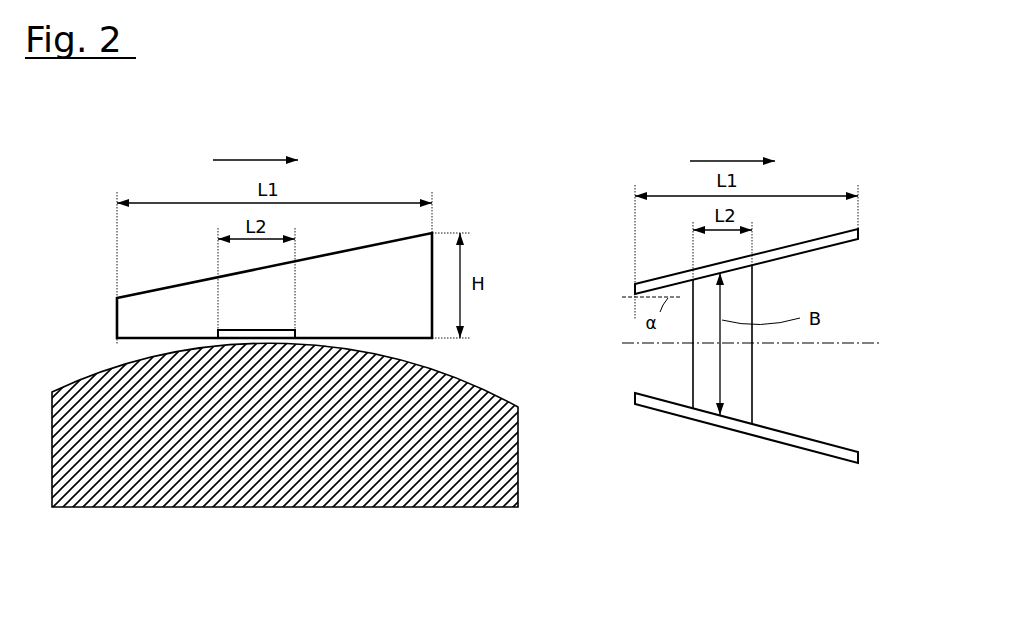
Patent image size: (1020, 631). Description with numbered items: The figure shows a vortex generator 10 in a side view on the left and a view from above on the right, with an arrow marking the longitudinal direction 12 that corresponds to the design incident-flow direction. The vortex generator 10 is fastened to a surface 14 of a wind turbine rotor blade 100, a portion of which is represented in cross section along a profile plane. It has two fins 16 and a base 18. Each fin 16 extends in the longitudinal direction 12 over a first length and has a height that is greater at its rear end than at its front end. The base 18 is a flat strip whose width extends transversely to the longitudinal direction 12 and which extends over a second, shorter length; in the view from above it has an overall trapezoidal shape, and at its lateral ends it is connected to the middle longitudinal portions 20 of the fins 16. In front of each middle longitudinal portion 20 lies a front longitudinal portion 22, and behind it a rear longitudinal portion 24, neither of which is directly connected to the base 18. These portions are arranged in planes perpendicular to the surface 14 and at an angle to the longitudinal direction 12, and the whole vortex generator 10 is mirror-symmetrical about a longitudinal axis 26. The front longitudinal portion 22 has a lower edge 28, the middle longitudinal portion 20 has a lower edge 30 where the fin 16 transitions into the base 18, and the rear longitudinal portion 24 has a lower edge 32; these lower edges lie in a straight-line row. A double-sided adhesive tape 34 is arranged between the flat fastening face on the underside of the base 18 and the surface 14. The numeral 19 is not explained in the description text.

The vortex generator 10 is at (412, 157).
The longitudinal direction 12 is at (494, 144).
The surface 14 is at (90, 375).
The fin 16 is at (417, 323).
The base 18 is at (242, 327).
The first contact edge 19 is at (227, 345).
The middle longitudinal portion 20 is at (248, 292).
The front longitudinal portion 22 is at (170, 308).
The rear longitudinal portion 24 is at (370, 280).
The longitudinal axis 26 is at (832, 345).
The lower edge 28 is at (143, 343).
The lower edge 30 is at (293, 345).
The lower edge 32 is at (402, 342).
The double-sided adhesive tape 34 is at (260, 345).
The wind turbine rotor blade 100 is at (462, 507).